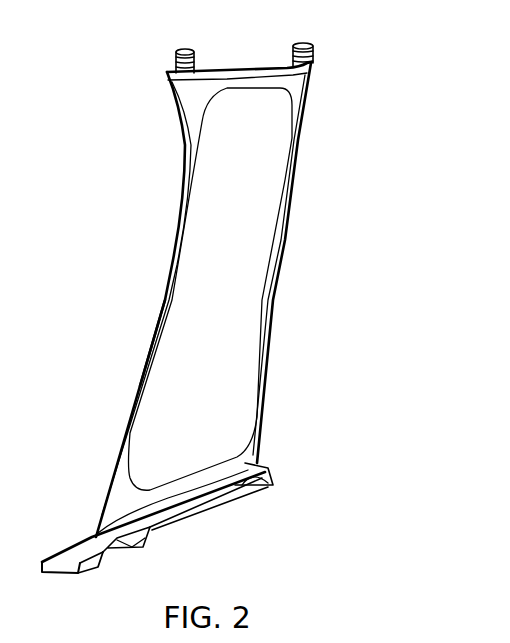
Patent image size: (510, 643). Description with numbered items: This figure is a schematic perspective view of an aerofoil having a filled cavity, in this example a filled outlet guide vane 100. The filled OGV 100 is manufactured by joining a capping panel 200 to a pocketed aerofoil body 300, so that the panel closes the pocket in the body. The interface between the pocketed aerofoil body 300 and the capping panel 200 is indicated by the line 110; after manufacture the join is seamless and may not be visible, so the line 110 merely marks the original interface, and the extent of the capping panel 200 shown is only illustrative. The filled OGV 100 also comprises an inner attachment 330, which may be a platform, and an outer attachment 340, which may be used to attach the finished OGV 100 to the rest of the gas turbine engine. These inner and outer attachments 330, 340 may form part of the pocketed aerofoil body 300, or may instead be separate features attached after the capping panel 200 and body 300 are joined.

The filled outlet guide vane 100 is at (340, 100).
The line 110 is at (158, 330).
The capping panel 200 is at (250, 262).
The pocketed aerofoil body 300 is at (117, 490).
The inner attachment 330 is at (243, 487).
The outer attachment 340 is at (240, 72).